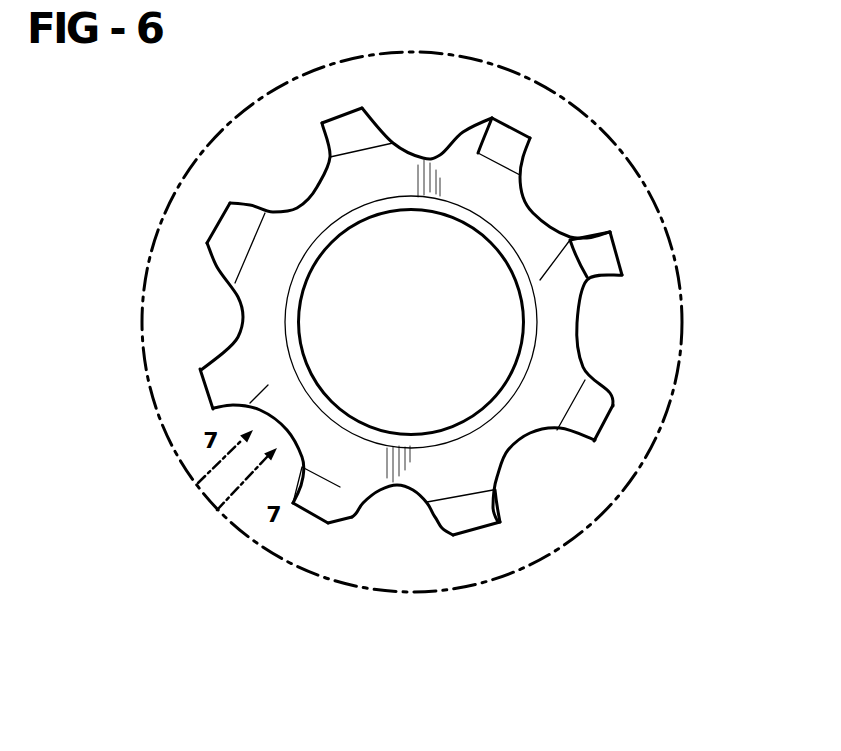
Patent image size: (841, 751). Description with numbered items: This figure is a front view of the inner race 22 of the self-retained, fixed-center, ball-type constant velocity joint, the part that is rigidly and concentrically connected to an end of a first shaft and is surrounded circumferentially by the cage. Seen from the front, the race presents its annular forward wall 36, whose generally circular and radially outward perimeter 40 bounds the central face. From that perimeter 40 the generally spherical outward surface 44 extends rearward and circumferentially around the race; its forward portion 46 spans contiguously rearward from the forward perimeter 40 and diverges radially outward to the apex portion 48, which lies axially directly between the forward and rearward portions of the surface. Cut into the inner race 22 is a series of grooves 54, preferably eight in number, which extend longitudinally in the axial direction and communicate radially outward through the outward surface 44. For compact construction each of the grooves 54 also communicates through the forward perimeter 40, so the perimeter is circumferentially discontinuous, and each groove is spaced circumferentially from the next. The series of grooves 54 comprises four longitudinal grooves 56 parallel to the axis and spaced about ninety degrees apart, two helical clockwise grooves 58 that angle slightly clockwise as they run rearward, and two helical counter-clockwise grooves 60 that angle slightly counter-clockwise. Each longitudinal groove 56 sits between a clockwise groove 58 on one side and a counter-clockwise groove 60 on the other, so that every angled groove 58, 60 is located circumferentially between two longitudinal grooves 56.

The inner race 22 is at (588, 105).
The annular forward wall 36 is at (483, 183).
The radially outward perimeter 40 is at (570, 265).
The outward surface 44 is at (342, 112).
The forward portion 46 is at (597, 427).
The apex portion 48 is at (620, 253).
The series of grooves 54 is at (428, 130).
The longitudinal grooves 56 is at (283, 177).
The helical clockwise grooves 58 is at (593, 340).
The helical counter-clockwise grooves 60 is at (407, 132).